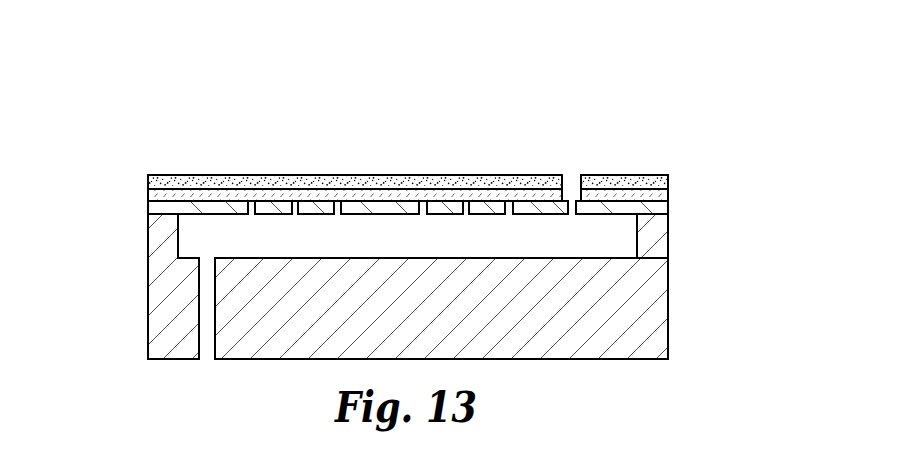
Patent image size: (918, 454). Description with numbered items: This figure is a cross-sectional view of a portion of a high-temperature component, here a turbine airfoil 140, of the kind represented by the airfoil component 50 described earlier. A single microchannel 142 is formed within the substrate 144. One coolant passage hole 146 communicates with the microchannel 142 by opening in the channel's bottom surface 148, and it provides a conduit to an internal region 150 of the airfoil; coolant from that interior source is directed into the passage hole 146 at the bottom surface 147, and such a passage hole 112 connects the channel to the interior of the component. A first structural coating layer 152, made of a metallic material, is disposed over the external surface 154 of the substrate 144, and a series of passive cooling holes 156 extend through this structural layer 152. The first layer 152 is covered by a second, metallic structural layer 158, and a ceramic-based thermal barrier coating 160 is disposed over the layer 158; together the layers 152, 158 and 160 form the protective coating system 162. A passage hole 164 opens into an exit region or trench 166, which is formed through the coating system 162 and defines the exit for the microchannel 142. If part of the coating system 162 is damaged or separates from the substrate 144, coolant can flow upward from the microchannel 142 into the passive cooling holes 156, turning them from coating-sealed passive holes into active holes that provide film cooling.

The airfoil component 50 is at (394, 180).
The passage hole 112 is at (647, 214).
The turbine airfoil 140 is at (404, 325).
The microchannel 142 is at (600, 250).
The substrate 144 is at (662, 343).
The coolant passage hole 146 is at (208, 357).
The bottom surface 147 is at (578, 359).
The bottom surface of the channel 148 is at (268, 257).
The internal region 150 is at (558, 390).
The first structural coating layer 152 is at (157, 208).
The external surface 154 is at (324, 188).
The passive cooling holes 156 is at (415, 198).
The second metallic structural layer 158 is at (313, 168).
The ceramic-based thermal barrier coating 160 is at (648, 180).
The protective coating system 162 is at (648, 221).
The passage hole 164 is at (573, 213).
The trench 166 is at (569, 172).